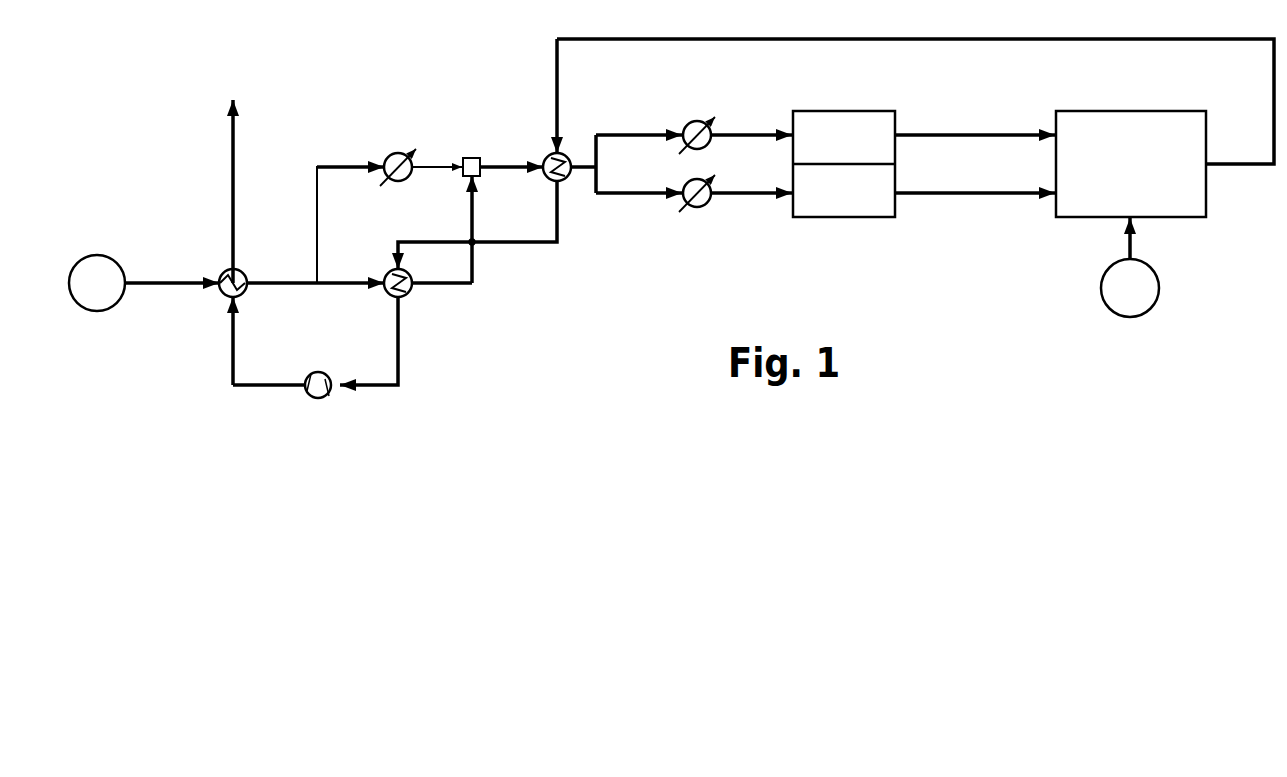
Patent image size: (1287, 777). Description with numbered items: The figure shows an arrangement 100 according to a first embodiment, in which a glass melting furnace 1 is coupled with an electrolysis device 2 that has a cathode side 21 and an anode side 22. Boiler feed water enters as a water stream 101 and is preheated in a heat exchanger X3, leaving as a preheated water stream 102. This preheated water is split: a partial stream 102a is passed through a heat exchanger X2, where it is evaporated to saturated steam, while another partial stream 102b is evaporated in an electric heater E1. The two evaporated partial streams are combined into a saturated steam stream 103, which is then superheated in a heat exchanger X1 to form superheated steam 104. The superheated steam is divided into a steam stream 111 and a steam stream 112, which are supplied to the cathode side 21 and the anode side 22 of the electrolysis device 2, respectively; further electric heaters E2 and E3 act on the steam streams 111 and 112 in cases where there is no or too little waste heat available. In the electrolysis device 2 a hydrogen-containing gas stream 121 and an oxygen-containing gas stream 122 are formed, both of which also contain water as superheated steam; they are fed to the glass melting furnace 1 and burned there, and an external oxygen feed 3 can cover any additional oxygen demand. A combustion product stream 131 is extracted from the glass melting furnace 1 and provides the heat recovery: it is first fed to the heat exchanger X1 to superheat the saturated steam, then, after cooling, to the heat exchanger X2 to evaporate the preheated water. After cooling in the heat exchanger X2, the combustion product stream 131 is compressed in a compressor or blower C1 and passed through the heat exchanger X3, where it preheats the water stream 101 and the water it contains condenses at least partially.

The arrangement 100 is at (148, 113).
The water stream 101 is at (110, 300).
The heat exchanger X3 is at (233, 269).
The water stream 102 is at (258, 281).
The partial stream 102a is at (342, 280).
The partial stream 102b is at (333, 166).
The electric heater E1 is at (405, 153).
The saturated steam stream 103 is at (484, 158).
The heat exchanger X1 is at (548, 158).
The superheated steam 104 is at (571, 181).
The heat exchanger X2 is at (410, 293).
The compressor or blower C1 is at (315, 372).
The electric heater E2 is at (686, 122).
The electric heater E3 is at (695, 208).
The steam stream 111 is at (735, 130).
The steam stream 112 is at (735, 200).
The electrolysis device 2 is at (851, 180).
The cathode side 21 is at (875, 119).
The anode side 22 is at (877, 207).
The hydrogen-containing gas stream 121 is at (965, 130).
The oxygen-containing gas stream 122 is at (965, 200).
The glass melting furnace 1 is at (1067, 203).
The external oxygen feed 3 is at (1150, 288).
The combustion product stream 131 is at (1247, 165).